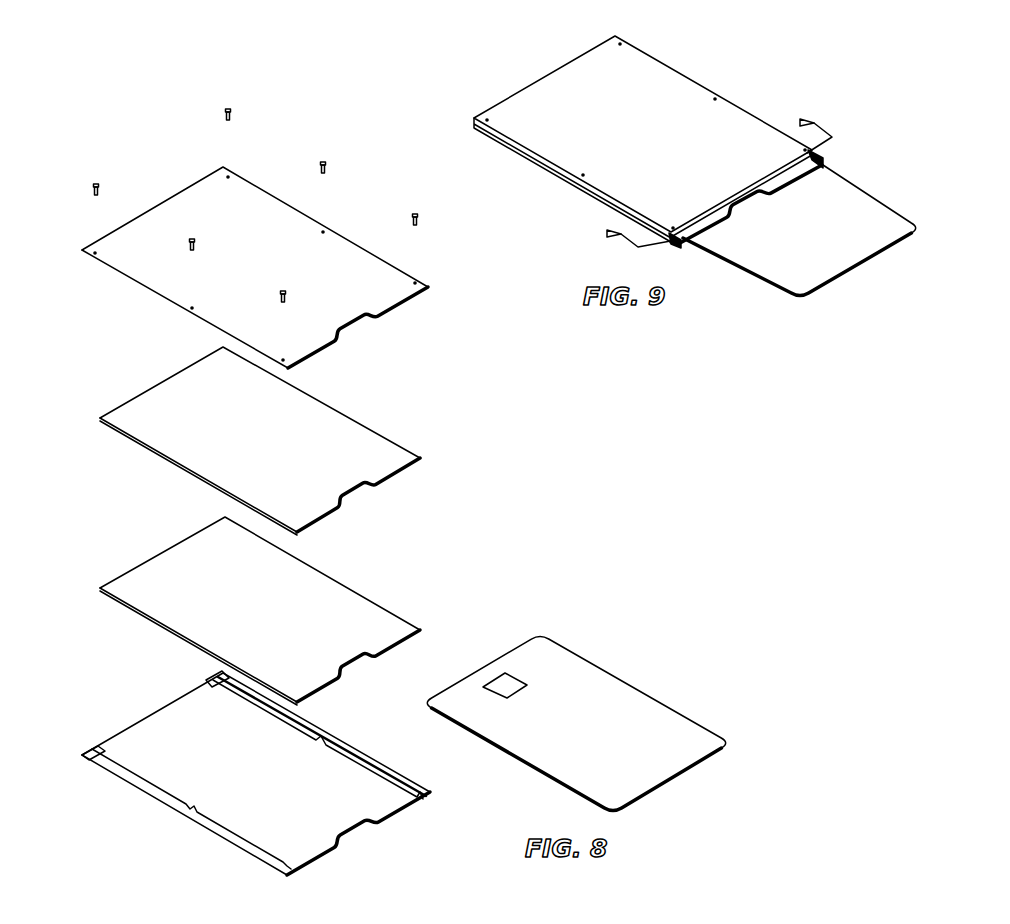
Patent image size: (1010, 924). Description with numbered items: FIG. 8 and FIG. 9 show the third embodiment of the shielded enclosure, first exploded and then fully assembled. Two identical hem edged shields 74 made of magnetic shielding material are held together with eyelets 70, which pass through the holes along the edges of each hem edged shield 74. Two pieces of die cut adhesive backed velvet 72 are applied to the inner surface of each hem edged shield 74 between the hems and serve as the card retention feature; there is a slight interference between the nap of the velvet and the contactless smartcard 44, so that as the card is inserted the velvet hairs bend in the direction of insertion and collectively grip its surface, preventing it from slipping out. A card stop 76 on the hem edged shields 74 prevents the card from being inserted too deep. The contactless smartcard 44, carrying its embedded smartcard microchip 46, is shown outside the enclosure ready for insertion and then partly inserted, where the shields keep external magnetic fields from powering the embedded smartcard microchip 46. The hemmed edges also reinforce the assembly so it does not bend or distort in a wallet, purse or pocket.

In FIG. 8, the contactless smartcard 44 is at (715, 723).
In FIG. 9, the contactless smartcard 44 is at (778, 287).
In FIG. 8, the embedded smartcard microchip 46 is at (520, 688).
In FIG. 8, the eyelets 70 is at (413, 223).
In FIG. 9, the eyelets 70 is at (805, 150).
In FIG. 8, the die cut adhesive backed velvet 72 is at (400, 473).
In FIG. 8, the hem edged shield 74 is at (393, 310).
In FIG. 9, the hem edged shield 74 is at (490, 112).
In FIG. 8, the card stop 76 is at (103, 753).